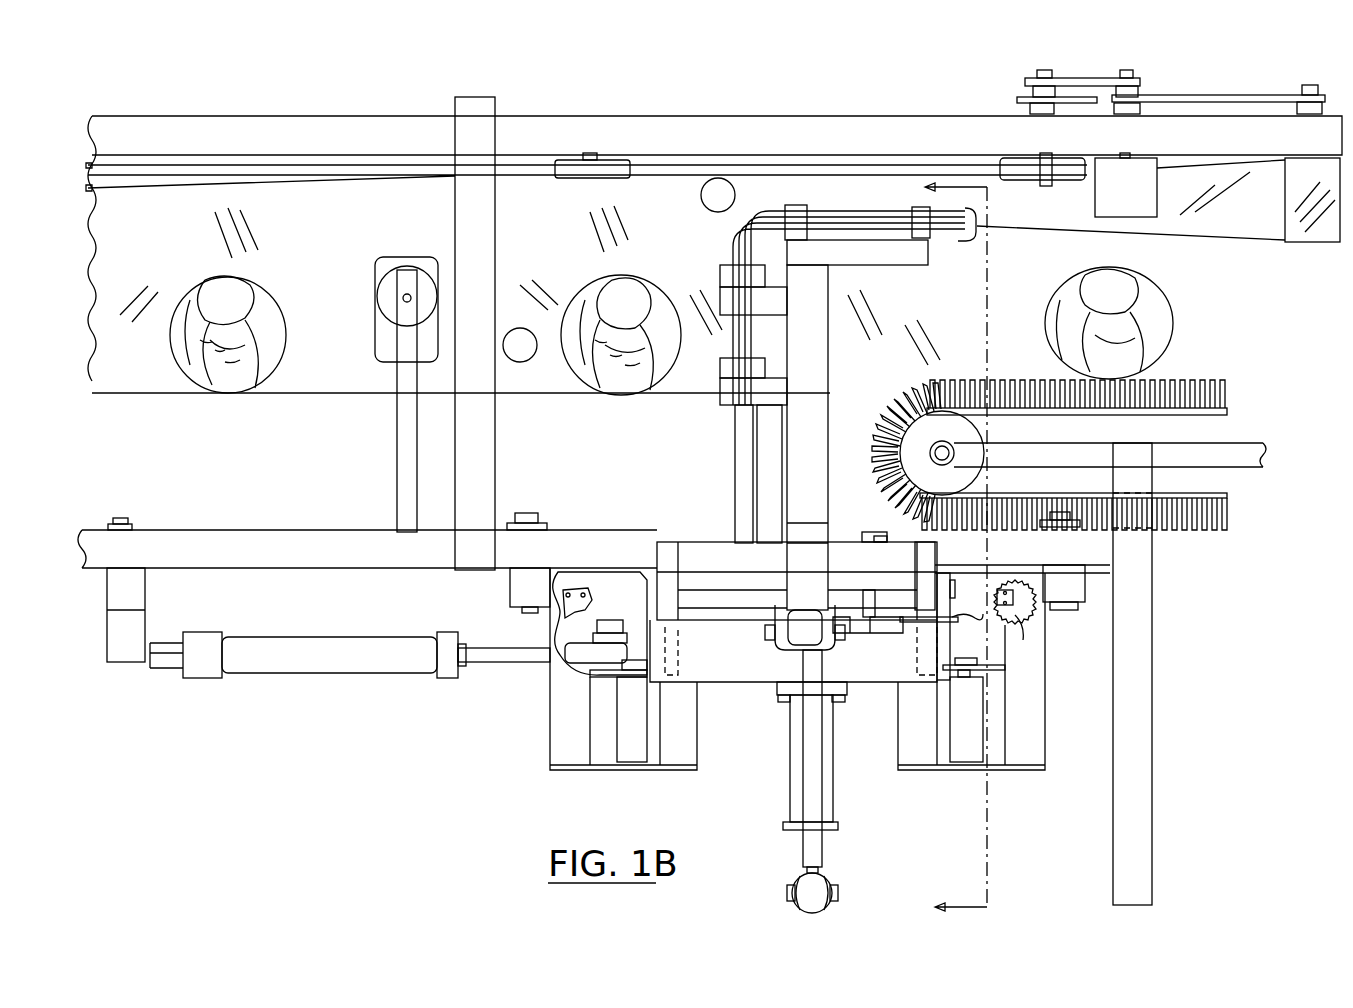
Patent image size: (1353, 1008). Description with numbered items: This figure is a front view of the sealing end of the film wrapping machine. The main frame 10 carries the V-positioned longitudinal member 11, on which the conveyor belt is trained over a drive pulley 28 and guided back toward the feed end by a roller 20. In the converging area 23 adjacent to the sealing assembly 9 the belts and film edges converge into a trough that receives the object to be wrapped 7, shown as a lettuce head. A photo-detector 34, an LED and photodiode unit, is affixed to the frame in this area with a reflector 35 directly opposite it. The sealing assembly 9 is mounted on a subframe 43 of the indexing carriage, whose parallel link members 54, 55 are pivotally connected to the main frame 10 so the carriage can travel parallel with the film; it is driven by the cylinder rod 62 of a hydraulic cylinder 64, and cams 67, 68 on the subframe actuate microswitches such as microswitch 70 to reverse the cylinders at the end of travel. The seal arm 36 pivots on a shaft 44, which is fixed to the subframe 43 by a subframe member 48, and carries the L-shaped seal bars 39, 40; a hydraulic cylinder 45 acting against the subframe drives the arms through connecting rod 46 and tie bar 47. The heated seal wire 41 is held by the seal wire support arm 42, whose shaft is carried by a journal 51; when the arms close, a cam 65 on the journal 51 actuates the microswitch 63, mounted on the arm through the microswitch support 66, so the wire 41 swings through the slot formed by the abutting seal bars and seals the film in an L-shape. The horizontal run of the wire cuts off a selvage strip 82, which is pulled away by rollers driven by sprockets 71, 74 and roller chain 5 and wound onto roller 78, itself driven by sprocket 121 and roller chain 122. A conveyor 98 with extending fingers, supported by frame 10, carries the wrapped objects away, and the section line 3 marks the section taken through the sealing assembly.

The longitudinal member 11 is at (289, 116).
The main frame 10 is at (497, 220).
The photo-detector 34 is at (392, 257).
The reflector 35 is at (383, 268).
The object to be wrapped 7 is at (243, 394).
The roller 20 is at (620, 170).
The sealing assembly 9 is at (718, 195).
The converging area 23 is at (520, 345).
The seal wire 41 is at (742, 271).
The seal bar 39 is at (808, 212).
The seal bar 40 is at (890, 251).
The seal wire support arm 42 is at (950, 251).
The seal arm 36 is at (830, 412).
The section line 3- 3 is at (944, 548).
The roller chain 5 is at (1090, 78).
The sprocket 71 is at (1027, 92).
The sprocket 74 is at (1135, 92).
The roller chain 122 is at (1215, 95).
The sprocket 121 is at (1300, 100).
The drive pulley 28 is at (1078, 181).
The roller 78 is at (1318, 243).
The selvage strip 82 is at (1247, 243).
The conveyor 98 is at (1212, 381).
The microswitch 63 is at (872, 532).
The microswitch support 66 is at (882, 532).
The journal 51 is at (717, 598).
The subframe 43 is at (742, 683).
The subframe member 48 is at (652, 580).
The cam 65 is at (872, 634).
The cam 68 is at (945, 631).
The shaft 44 is at (955, 593).
The cam 67 is at (985, 621).
The microswitch 70 is at (1021, 626).
The parallel link member 55 is at (970, 753).
The parallel link member 54 is at (632, 753).
The hydraulic cylinder 64 is at (308, 677).
The cylinder rod 62 is at (502, 663).
The connecting rod 46 is at (835, 739).
The hydraulic cylinder 45 is at (828, 783).
The tie bar 47 is at (822, 874).